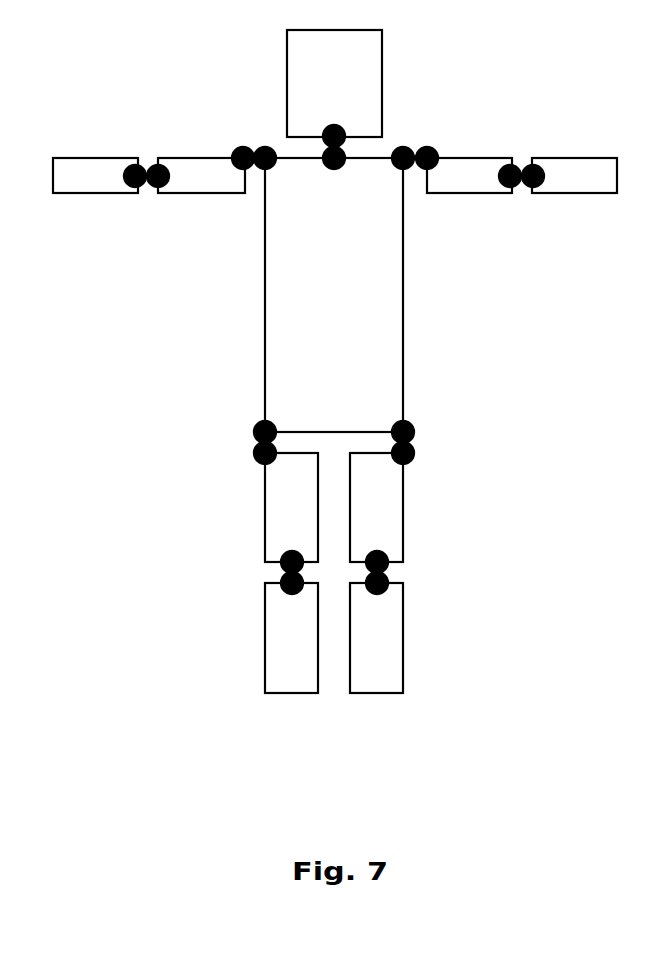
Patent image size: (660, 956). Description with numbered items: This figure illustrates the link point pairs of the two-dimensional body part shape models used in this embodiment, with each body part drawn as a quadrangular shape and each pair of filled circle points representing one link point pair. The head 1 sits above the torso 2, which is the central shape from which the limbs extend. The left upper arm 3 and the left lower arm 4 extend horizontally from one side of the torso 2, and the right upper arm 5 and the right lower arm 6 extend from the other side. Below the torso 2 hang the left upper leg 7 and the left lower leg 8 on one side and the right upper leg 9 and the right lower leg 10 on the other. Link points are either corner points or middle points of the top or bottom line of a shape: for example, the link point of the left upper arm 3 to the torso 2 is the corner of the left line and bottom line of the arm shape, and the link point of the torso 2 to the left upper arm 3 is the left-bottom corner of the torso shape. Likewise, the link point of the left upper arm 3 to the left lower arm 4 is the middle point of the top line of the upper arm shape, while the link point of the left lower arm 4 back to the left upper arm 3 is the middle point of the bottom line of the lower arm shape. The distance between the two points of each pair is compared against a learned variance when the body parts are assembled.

The head 1 is at (334, 89).
The torso 2 is at (334, 295).
The left upper arm 3 is at (183, 157).
The left lower arm 4 is at (90, 193).
The right upper arm 5 is at (493, 157).
The right lower arm 6 is at (577, 193).
The left upper leg 7 is at (265, 502).
The left lower leg 8 is at (265, 637).
The right upper leg 9 is at (403, 510).
The right lower leg 10 is at (403, 633).